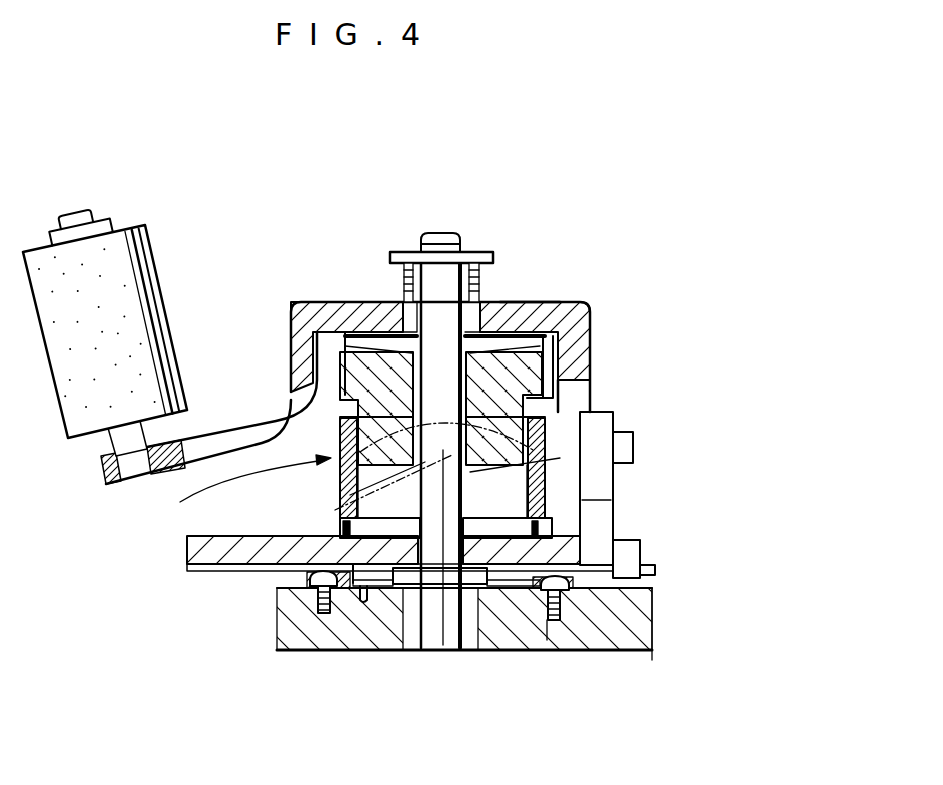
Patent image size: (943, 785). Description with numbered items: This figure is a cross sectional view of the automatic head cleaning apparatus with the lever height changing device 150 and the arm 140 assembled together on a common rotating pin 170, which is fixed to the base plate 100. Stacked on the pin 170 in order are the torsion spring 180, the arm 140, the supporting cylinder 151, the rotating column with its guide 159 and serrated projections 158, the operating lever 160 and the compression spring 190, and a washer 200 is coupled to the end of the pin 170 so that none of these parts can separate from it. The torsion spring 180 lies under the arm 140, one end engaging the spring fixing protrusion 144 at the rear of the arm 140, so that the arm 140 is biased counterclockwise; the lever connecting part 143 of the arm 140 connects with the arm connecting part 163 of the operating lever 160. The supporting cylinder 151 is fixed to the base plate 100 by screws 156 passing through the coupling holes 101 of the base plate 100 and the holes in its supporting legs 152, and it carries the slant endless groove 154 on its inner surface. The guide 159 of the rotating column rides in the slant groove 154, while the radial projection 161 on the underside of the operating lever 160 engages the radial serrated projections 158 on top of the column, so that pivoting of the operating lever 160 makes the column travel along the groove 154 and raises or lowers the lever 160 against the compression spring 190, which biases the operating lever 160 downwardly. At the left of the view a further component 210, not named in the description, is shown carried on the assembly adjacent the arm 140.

The base plate 100 is at (645, 616).
The coupling hole 101 is at (547, 622).
The arm 140 is at (420, 467).
The lever connecting part 143 is at (602, 520).
The spring fixing protrusion 144 is at (628, 553).
The lever height changing device 150 is at (180, 502).
The supporting cylinder 151 is at (340, 500).
The supporting leg 152 is at (358, 590).
The slant endless groove 154 is at (300, 566).
The screw 156 is at (312, 612).
The radial serrated projection 158 is at (538, 303).
The guide 159 is at (580, 498).
The operating lever 160 is at (291, 300).
The radial projection 161 is at (345, 333).
The arm connecting part 163 is at (635, 443).
The rotating pin 170 is at (438, 283).
The torsion spring 180 is at (372, 605).
The compression spring 190 is at (477, 293).
The washer 200 is at (478, 262).
The motor 210 is at (150, 232).